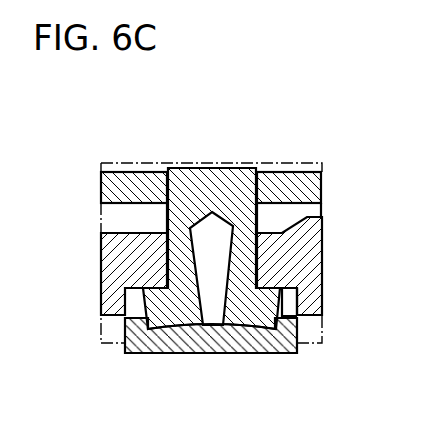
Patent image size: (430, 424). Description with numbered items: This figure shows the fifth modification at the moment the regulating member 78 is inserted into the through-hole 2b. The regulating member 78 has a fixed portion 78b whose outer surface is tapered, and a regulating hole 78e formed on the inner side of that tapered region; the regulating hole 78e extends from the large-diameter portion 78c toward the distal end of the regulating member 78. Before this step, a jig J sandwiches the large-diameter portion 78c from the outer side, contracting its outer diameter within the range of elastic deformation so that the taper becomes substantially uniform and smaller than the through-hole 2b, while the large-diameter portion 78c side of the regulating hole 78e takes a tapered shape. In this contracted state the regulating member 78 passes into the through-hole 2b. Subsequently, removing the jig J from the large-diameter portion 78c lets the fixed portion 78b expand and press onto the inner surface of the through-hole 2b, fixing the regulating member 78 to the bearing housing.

The through-hole 2b is at (167, 233).
The regulating member 78 is at (211, 249).
The fixed portion 78b is at (260, 271).
The large-diameter portion 78c is at (322, 316).
The regulating hole 78e is at (217, 306).
The jig J is at (125, 353).